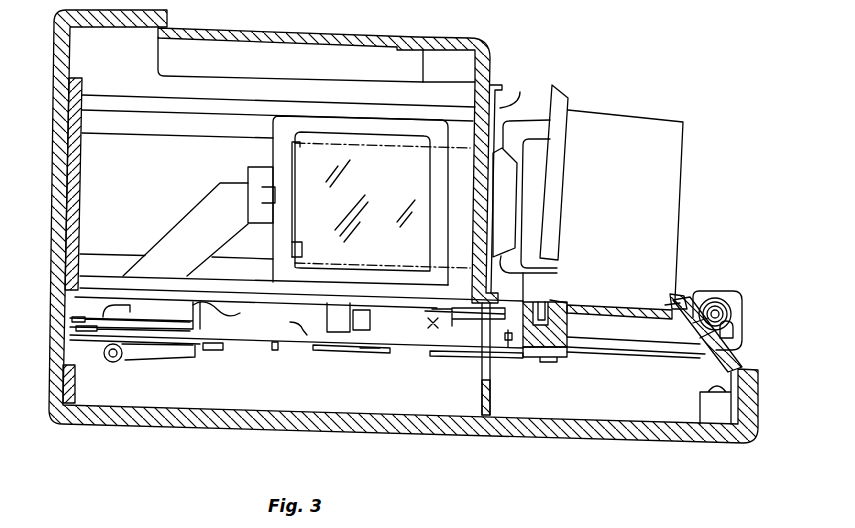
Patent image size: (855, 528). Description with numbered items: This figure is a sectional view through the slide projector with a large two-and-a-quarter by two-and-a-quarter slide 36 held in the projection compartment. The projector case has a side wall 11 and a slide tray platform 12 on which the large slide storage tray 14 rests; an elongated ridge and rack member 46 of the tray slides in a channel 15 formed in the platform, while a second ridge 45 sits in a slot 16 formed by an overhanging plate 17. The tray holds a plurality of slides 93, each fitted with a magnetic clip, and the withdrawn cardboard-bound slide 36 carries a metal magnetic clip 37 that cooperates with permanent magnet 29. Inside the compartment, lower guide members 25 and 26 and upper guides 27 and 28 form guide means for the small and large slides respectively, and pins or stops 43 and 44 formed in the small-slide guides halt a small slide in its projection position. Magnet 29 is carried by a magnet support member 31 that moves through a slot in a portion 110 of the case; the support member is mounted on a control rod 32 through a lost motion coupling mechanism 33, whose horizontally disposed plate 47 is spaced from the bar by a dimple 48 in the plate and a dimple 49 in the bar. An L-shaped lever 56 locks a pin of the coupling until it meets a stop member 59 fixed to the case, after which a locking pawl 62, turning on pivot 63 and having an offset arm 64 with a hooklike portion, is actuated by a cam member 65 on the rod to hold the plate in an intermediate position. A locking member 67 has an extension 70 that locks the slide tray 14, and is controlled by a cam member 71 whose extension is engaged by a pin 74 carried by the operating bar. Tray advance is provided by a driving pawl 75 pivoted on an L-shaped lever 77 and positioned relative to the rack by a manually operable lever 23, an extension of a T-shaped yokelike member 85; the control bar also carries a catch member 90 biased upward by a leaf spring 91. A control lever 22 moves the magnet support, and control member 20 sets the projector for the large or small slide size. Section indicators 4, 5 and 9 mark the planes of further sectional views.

The section line 4- 4 is at (45, 357).
The section line 5- 5 is at (50, 297).
The section line 9- 9 is at (305, 112).
The side wall 11 is at (528, 172).
The slide tray platform 12 is at (617, 304).
The slide storage tray 14 is at (606, 207).
The channel 15 is at (565, 327).
The slot 16 is at (673, 321).
The overhanging plate 17 is at (678, 294).
The control member 20 is at (503, 88).
The control lever 22 is at (725, 291).
The manually operable lever 23 is at (733, 330).
The lower guide member 25 is at (123, 254).
The lower guide member 26 is at (107, 281).
The upper guide 27 is at (168, 135).
The upper guide 28 is at (143, 108).
The permanent magnet 29 is at (262, 167).
The magnet support member 31 is at (200, 206).
The control rod 32 is at (245, 341).
The lost motion coupling mechanism 33 is at (143, 367).
The slide 36 is at (381, 202).
The metal magnetic clip 37 is at (287, 190).
The pin 43 is at (302, 250).
The pin 44 is at (300, 147).
The second ridge 45 is at (670, 305).
The ridge and rack member 46 is at (553, 298).
The plate 47 is at (75, 319).
The dimple 48 is at (200, 323).
The dimple 49 is at (70, 329).
The L-shaped lever 56 is at (118, 306).
The stop member 59 is at (370, 320).
The locking pawl 62 is at (363, 348).
The pivot 63 is at (345, 351).
The offset arm 64 is at (297, 330).
The cam member 65 is at (213, 351).
The locking member 67 is at (510, 341).
The extension 70 is at (532, 308).
The cam member 71 is at (452, 358).
The pin 74 is at (277, 351).
The driving pawl 75 is at (498, 291).
The L-shaped lever 77 is at (445, 309).
The T-shaped yokelike member 85 is at (630, 339).
The catch member 90 is at (223, 316).
The leaf spring 91 is at (170, 351).
The slides 93 is at (537, 97).
The portion of the case 110 is at (238, 289).